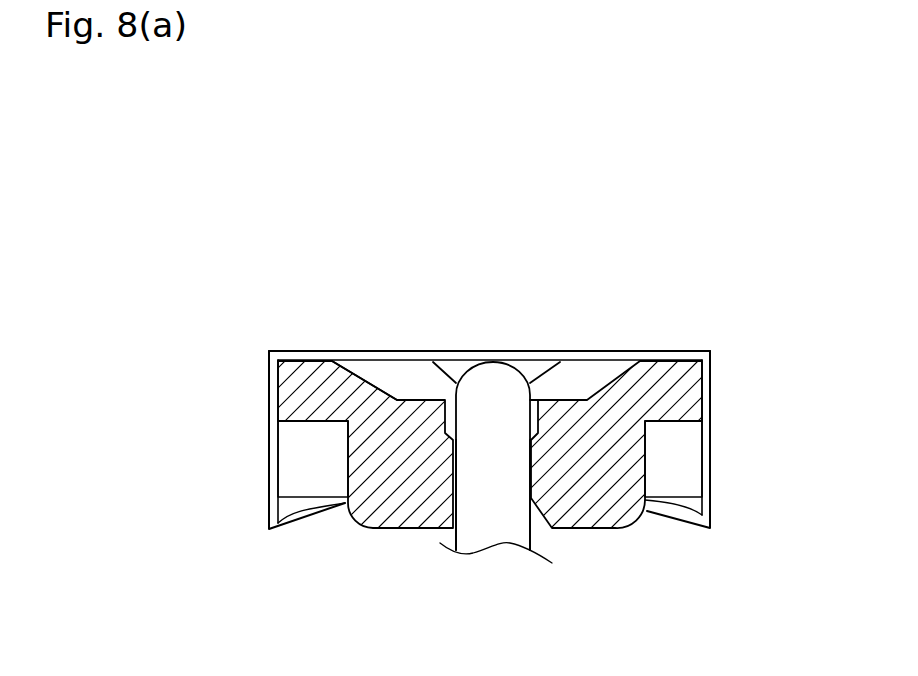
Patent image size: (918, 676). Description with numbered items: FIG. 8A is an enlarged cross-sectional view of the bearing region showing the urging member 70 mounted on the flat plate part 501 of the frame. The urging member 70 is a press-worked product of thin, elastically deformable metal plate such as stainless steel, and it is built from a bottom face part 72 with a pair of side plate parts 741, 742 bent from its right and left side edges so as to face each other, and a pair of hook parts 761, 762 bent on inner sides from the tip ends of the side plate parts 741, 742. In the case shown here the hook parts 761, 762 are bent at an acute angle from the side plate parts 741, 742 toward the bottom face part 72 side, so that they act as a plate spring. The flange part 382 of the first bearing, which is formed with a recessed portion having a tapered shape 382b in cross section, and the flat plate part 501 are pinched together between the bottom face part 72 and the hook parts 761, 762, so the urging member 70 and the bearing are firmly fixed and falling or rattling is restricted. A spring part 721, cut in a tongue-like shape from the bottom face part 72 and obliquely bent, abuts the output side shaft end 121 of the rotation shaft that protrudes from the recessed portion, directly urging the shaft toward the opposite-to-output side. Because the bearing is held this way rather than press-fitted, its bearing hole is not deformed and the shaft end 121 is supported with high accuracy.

The urging member 70 is at (496, 338).
The bottom face part 72 is at (580, 351).
The spring part 721 is at (452, 368).
The flange part 382 is at (583, 533).
The tapered shape 382b is at (298, 379).
The output side shaft end 121 is at (470, 492).
The flat plate part 501 is at (298, 468).
The side plate part 741 is at (273, 415).
The side plate part 742 is at (705, 378).
The hook part 761 is at (305, 517).
The hook part 762 is at (673, 505).